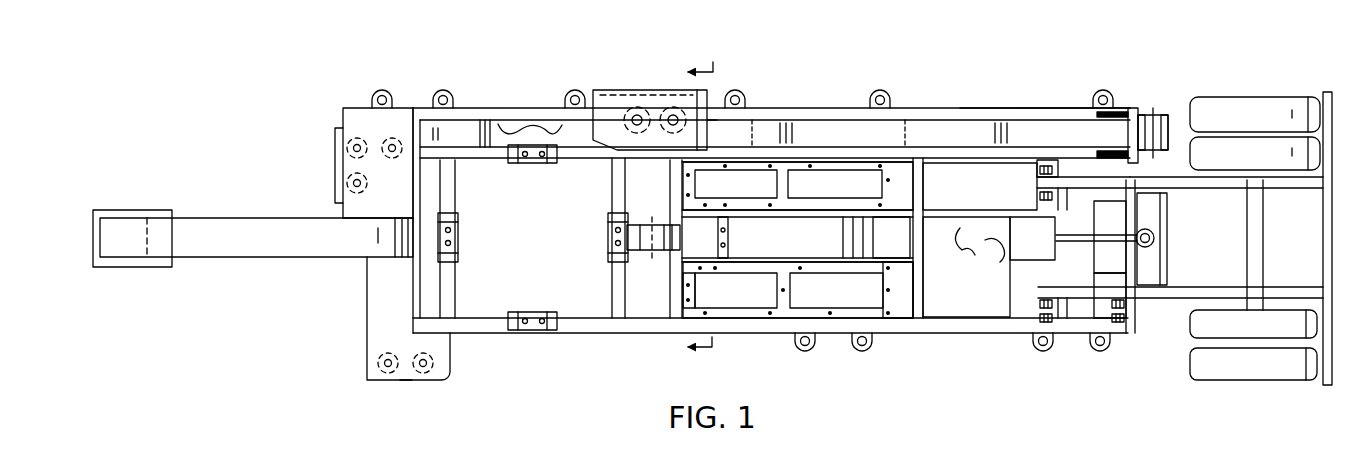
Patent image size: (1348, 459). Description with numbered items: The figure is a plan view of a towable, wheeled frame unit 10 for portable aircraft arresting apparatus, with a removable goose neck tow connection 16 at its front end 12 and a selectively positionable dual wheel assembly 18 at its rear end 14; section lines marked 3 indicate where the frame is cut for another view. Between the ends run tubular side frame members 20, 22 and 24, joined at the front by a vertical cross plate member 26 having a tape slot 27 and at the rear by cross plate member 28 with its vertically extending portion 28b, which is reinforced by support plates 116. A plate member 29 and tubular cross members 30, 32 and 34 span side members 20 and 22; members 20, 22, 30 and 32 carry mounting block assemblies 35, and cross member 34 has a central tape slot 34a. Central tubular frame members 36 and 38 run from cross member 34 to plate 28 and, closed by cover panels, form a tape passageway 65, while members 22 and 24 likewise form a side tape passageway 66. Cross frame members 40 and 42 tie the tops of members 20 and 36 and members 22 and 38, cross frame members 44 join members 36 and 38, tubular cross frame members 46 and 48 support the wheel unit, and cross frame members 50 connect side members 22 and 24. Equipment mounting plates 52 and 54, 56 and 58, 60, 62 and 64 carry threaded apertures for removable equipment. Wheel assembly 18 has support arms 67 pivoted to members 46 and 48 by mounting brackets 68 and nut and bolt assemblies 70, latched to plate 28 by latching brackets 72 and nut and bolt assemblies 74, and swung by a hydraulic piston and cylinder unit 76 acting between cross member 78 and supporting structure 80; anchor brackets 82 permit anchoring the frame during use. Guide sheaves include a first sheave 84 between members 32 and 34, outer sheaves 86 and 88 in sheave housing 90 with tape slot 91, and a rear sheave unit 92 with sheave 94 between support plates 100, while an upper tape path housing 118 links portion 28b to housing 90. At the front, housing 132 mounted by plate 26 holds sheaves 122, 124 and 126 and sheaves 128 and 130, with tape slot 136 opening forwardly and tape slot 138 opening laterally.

The towable wheeled frame unit 10 is at (1005, 63).
The front end 12 is at (357, 97).
The rear end 14 is at (1187, 96).
The goose neck tow connection 16 is at (226, 253).
The dual wheel assembly 18 is at (1271, 389).
The side frame member 20 is at (950, 335).
The side frame member 22 is at (943, 150).
The side frame member 24 is at (970, 118).
The front cross plate member 26 is at (457, 200).
The tape slot 27 is at (433, 130).
The rear cross plate member 28 is at (1136, 322).
The vertically extending portion 28b is at (1132, 111).
The plate member 29 is at (425, 283).
The tubular cross member 30 is at (456, 305).
The tubular cross member 32 is at (612, 305).
The tubular cross member 34 is at (677, 307).
The tape slot 34a is at (797, 237).
The mounting block assemblies 35 is at (535, 164).
The longitudinally extending tubular frame member 36 is at (958, 268).
The longitudinally extending tubular frame member 38 is at (952, 211).
The cross frame member 40 is at (910, 300).
The cross frame member 42 is at (912, 178).
The cross frame members 44 is at (964, 238).
The tubular cross frame member 46 is at (1042, 326).
The tubular cross frame member 48 is at (1047, 160).
The cross frame members 50 is at (421, 128).
The equipment mounting plate 52 is at (757, 320).
The equipment mounting plate 54 is at (736, 290).
The mounting plate 56 is at (736, 184).
The mounting plate 58 is at (835, 184).
The mounting plates 60 is at (846, 240).
The mounting plates 62 is at (795, 300).
The mounting plates 64 is at (800, 170).
The tape passageway 65 is at (990, 252).
The tape passageway 66 is at (528, 130).
The support arms 67 is at (1208, 189).
The mounting brackets 68 is at (1035, 178).
The nut and bolt assemblies 70 is at (1056, 319).
The latching bracket 72 is at (1118, 329).
The nut and bolt assemblies 74 is at (1110, 237).
The hydraulic piston and cylinder unit 76 is at (1154, 237).
The cross member 78 is at (1167, 270).
The supporting structure 80 is at (1102, 273).
The anchor brackets 82 is at (575, 92).
The first sheave 84 is at (652, 225).
The laterally outer sheave 86 is at (673, 107).
The laterally outer sheave 88 is at (637, 107).
The sheave housing 90 is at (655, 87).
The tape slot 91 is at (710, 130).
The rear sheave unit 92 is at (1160, 108).
The sheave 94 is at (1165, 130).
The support plates 100 is at (1165, 151).
The support plates 116 is at (1097, 186).
The upper tape path housing 118 is at (1075, 128).
The sheave 122 is at (392, 137).
The sheave 124 is at (349, 140).
The sheave 126 is at (347, 183).
The sheave 128 is at (432, 374).
The sheave 130 is at (373, 380).
The front sheave housing 132 is at (356, 270).
The tape slot 136 is at (350, 172).
The tape slot 138 is at (405, 382).
The section line 3 is at (708, 207).